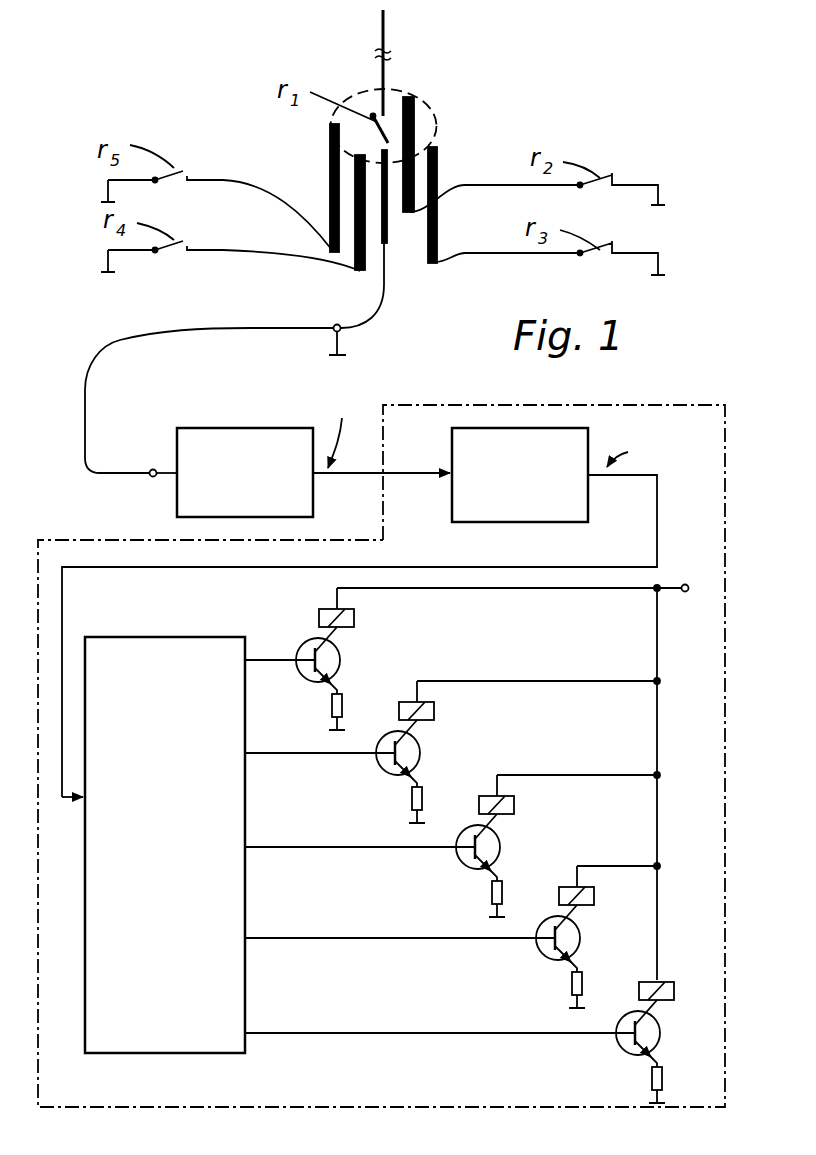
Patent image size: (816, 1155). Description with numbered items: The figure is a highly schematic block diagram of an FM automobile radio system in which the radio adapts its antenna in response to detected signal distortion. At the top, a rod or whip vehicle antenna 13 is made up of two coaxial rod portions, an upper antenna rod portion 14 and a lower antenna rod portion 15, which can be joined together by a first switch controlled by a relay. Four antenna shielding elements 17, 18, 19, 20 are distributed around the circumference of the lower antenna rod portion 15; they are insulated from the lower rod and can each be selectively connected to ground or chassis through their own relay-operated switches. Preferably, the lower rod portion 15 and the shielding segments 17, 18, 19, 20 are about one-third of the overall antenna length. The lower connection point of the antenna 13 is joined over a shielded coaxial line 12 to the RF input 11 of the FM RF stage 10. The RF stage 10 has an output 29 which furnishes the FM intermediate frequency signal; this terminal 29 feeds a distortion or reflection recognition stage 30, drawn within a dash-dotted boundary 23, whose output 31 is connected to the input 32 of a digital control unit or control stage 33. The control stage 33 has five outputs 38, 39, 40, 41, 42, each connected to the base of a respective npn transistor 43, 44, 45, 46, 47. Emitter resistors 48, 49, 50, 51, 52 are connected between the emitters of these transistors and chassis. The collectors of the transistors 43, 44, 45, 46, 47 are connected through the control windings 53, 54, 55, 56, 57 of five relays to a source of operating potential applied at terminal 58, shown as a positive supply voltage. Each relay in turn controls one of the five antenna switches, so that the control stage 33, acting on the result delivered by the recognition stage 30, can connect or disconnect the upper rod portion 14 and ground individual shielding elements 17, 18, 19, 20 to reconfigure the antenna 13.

The FM RF stage 10 is at (177, 505).
The RF input 11 is at (151, 470).
The shielded coaxial line 12 is at (93, 362).
The rod or whip vehicle antenna 13 is at (418, 72).
The upper antenna rod portion 14 is at (382, 66).
The lower antenna rod portion 15 is at (386, 242).
The antenna shielding element 17 is at (414, 124).
The antenna shielding element 18 is at (442, 177).
The antenna shielding element 19 is at (330, 207).
The antenna shielding element 20 is at (332, 160).
The distortion recognition circuit boundary 23 is at (490, 403).
The output of the RF stage 29 is at (320, 477).
The distortion or reflection recognition stage 30 is at (588, 438).
The output of the distortion recognition stage 31 is at (593, 477).
The input of the control stage 32 is at (67, 802).
The digital control unit or control stage 33 is at (85, 917).
The control stage output 38 is at (248, 663).
The control stage output 39 is at (247, 755).
The control stage output 40 is at (250, 848).
The control stage output 41 is at (250, 940).
The control stage output 42 is at (250, 1036).
The npn transistor 43 is at (312, 682).
The npn transistor 44 is at (392, 773).
The npn transistor 45 is at (472, 868).
The npn transistor 46 is at (542, 955).
The npn transistor 47 is at (623, 1048).
The emitter resistor 48 is at (343, 700).
The emitter resistor 49 is at (425, 795).
The emitter resistor 50 is at (507, 882).
The emitter resistor 51 is at (583, 978).
The emitter resistor 52 is at (665, 1072).
The relay control winding 53 is at (323, 608).
The relay control winding 54 is at (425, 722).
The relay control winding 55 is at (508, 815).
The relay control winding 56 is at (587, 907).
The relay control winding 57 is at (667, 980).
The operating potential terminal 58 is at (685, 584).